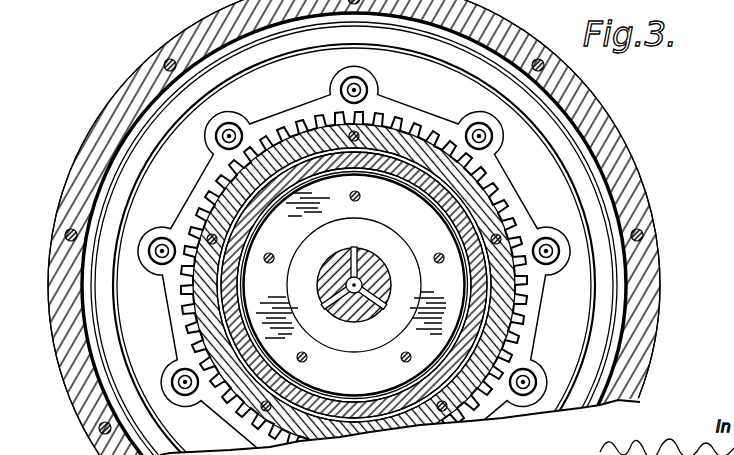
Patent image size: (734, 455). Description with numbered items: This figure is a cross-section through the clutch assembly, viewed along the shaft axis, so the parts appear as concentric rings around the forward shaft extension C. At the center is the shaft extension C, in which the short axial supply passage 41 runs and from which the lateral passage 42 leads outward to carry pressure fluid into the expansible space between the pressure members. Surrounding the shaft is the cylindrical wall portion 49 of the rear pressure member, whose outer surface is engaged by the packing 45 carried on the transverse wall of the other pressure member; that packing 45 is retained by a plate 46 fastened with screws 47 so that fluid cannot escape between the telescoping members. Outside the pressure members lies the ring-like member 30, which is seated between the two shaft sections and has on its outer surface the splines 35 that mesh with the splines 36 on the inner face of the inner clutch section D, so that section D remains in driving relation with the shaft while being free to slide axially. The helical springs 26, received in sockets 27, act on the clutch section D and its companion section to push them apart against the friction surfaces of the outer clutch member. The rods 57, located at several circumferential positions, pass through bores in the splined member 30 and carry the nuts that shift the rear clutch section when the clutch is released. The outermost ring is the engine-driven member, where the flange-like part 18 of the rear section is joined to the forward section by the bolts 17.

The bolts 17 is at (166, 60).
The flange-like part 18 is at (193, 35).
The packing 45 is at (263, 197).
The rods 57 is at (378, 122).
The inner clutch section D is at (442, 87).
The sockets 27 is at (474, 124).
The helical springs 26 is at (493, 138).
The splines 35 is at (384, 259).
The splines 36 is at (508, 209).
The plate 46 is at (354, 285).
The screws 47 is at (434, 253).
The forward shaft extension C is at (384, 297).
The lateral passage 42 is at (336, 302).
The axial supply passage 41 is at (357, 293).
The ring-like member 30 is at (502, 303).
The cylindrical wall portion 49 is at (373, 285).